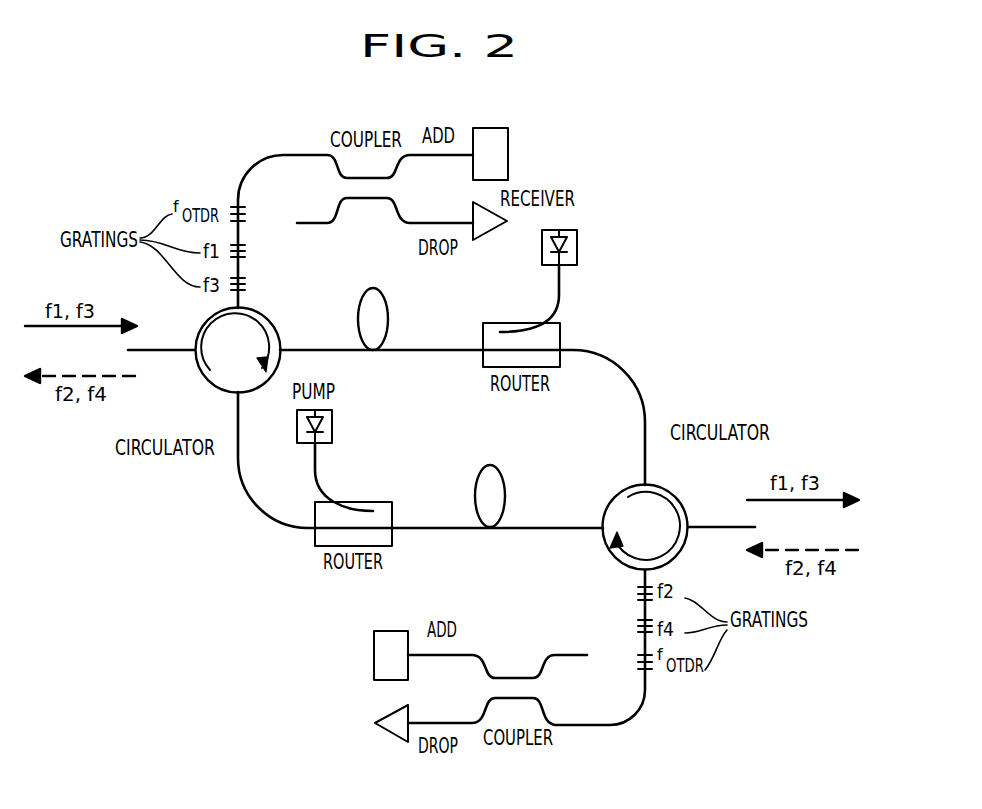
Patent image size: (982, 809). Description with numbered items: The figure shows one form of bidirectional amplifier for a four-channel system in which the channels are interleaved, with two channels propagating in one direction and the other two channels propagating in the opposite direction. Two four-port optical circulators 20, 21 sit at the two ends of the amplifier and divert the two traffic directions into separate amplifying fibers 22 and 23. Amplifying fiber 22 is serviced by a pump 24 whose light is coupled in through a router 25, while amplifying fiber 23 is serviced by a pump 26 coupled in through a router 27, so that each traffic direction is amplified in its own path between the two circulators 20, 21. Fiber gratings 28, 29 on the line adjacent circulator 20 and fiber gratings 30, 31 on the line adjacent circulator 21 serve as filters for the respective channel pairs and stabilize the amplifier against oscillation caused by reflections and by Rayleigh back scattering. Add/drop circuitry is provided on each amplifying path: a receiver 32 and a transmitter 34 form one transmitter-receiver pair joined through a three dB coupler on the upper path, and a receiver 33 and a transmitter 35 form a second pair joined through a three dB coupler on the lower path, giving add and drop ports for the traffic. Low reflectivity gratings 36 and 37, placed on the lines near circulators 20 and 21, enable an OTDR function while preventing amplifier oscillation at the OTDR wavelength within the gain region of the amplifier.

The optical circulator 20 is at (207, 386).
The optical circulator 21 is at (676, 497).
The amplifying fiber 22 is at (388, 318).
The amplifying fiber 23 is at (505, 475).
The pump 24 is at (577, 250).
The router 25 is at (562, 336).
The pump 26 is at (332, 428).
The router 27 is at (318, 538).
The fiber grating 28 is at (246, 247).
The fiber grating 29 is at (246, 283).
The fiber grating 30 is at (635, 593).
The fiber grating 31 is at (635, 628).
The receiver 32 is at (483, 228).
The receiver 33 is at (386, 725).
The transmitter 34 is at (503, 145).
The transmitter 35 is at (374, 658).
The low reflectivity grating 36 is at (236, 200).
The low reflectivity grating 37 is at (650, 683).